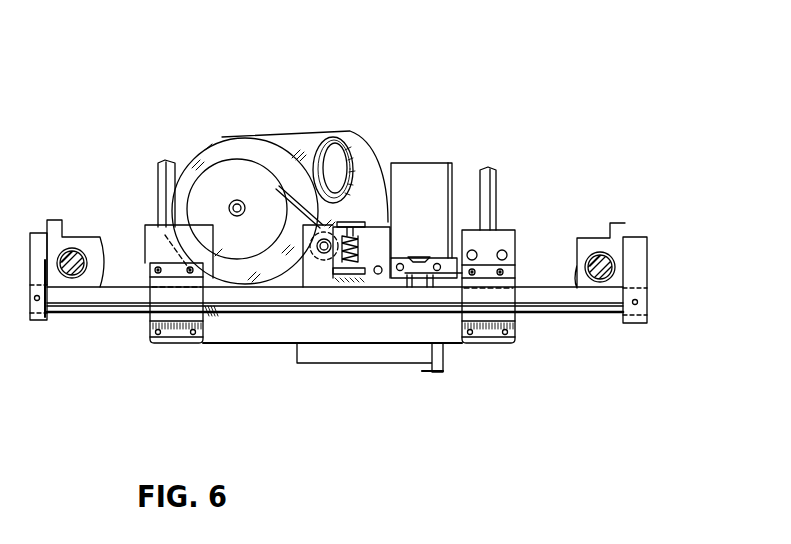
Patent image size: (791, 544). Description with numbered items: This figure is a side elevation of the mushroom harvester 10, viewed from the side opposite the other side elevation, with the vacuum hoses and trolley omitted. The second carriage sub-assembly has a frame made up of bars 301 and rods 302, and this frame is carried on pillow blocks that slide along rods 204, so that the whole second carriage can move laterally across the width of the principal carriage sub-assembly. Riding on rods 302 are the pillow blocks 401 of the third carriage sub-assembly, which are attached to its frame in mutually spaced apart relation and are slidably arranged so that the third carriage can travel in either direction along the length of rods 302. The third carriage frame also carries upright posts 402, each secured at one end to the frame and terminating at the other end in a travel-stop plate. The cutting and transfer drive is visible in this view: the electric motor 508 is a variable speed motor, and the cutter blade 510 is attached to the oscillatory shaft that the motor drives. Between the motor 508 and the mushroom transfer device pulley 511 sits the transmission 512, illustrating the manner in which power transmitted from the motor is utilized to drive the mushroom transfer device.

The grinding assembly 10 is at (350, 124).
The rods 204 is at (73, 257).
The bars 301 is at (90, 282).
The rods 302 is at (568, 303).
The pillow blocks 401 is at (167, 317).
The upright posts 402 is at (158, 180).
The electric motor 508 is at (363, 244).
The cutter blade 510 is at (436, 372).
The mushroom transfer device pulley 511 is at (235, 168).
The transmission 512 is at (437, 197).